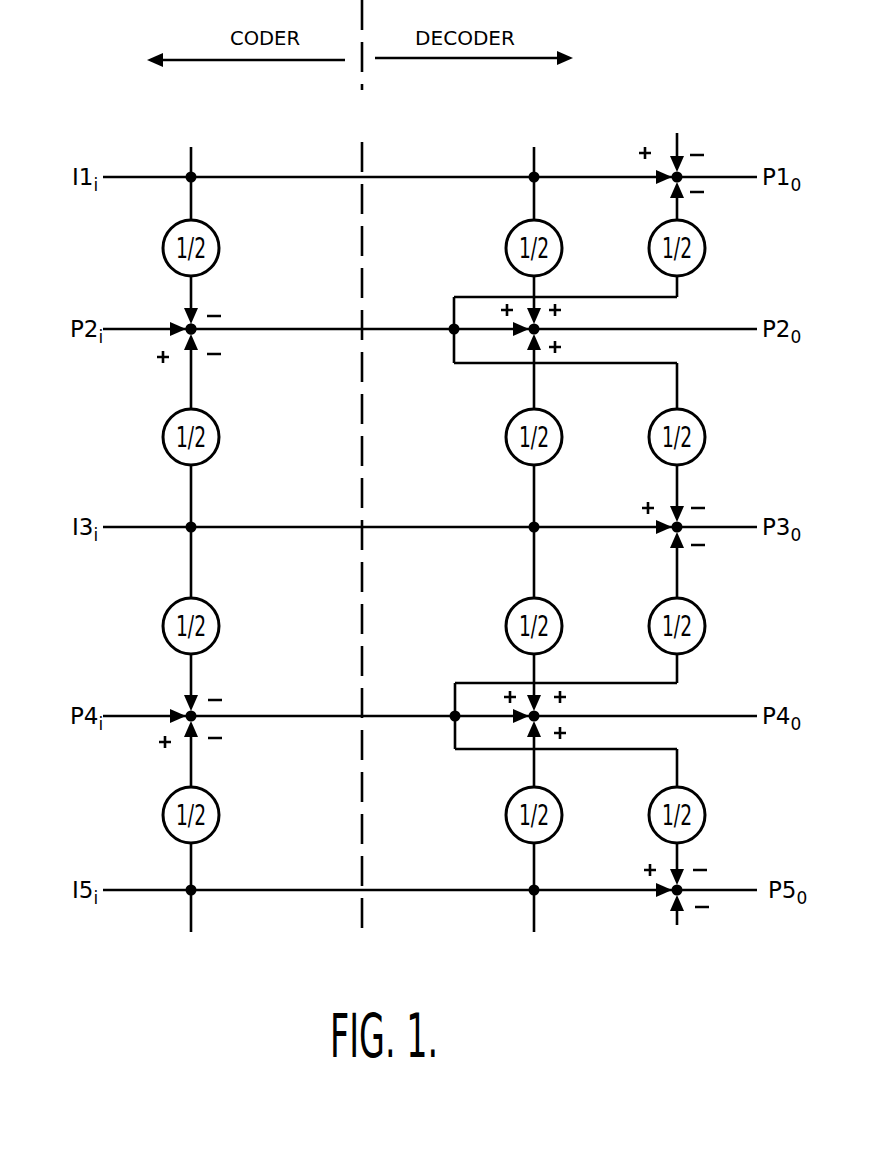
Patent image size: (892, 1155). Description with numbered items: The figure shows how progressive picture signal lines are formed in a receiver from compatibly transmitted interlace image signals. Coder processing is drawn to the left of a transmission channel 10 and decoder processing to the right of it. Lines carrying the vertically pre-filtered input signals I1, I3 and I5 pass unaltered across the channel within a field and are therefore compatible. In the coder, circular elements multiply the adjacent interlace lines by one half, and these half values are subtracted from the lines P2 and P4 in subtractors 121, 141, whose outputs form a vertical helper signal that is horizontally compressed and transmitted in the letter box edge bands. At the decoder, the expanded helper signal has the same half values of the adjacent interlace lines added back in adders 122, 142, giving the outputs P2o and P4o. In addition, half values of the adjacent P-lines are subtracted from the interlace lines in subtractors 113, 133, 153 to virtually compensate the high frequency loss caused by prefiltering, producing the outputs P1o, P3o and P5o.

The transmission channel 10 is at (361, 466).
The subtractor 113 is at (694, 169).
The subtractor 121 is at (211, 338).
The adder 122 is at (505, 353).
The subtractor 133 is at (688, 540).
The subtractor 141 is at (213, 725).
The adder 142 is at (508, 739).
The subtractor 153 is at (689, 903).